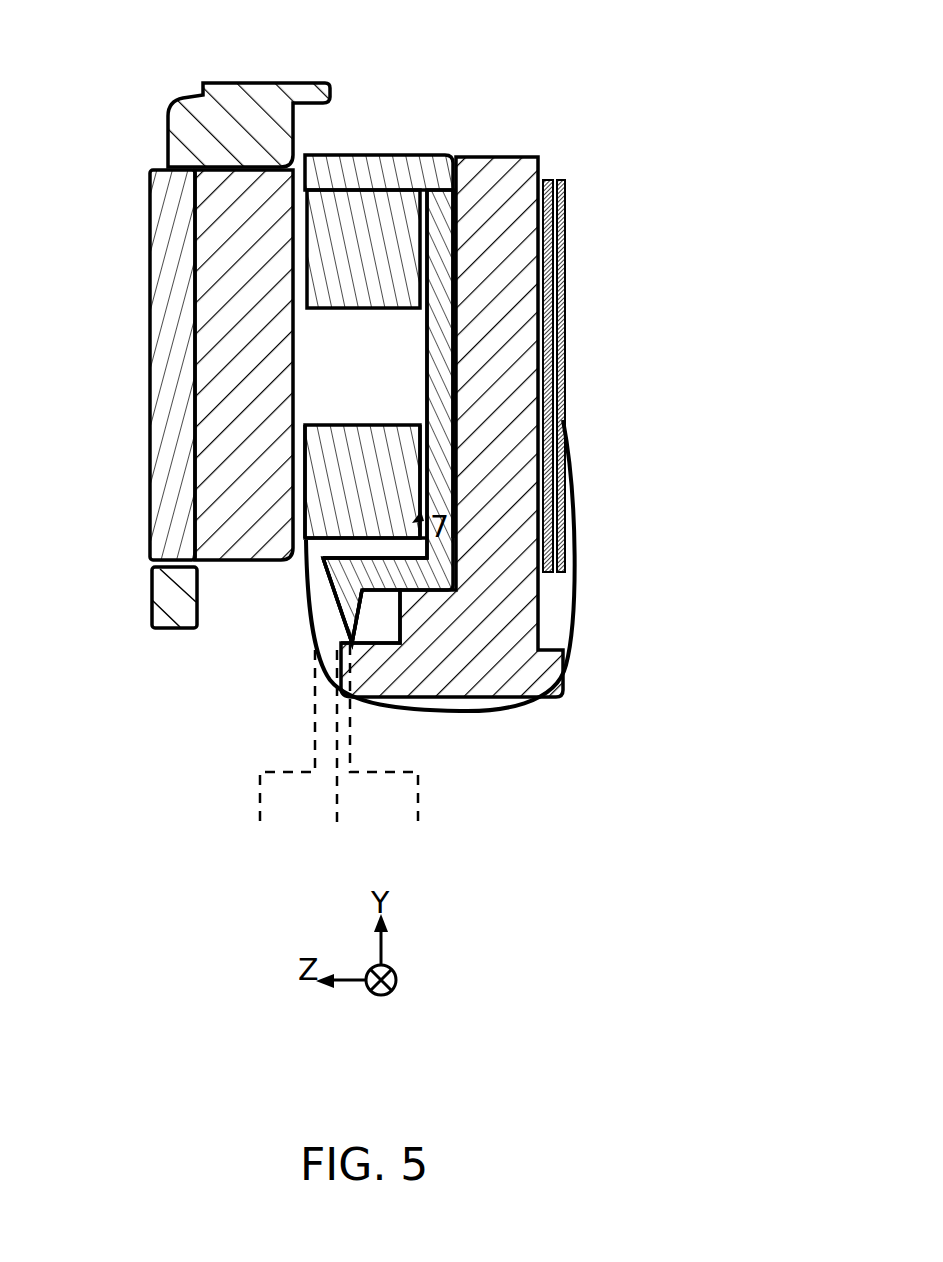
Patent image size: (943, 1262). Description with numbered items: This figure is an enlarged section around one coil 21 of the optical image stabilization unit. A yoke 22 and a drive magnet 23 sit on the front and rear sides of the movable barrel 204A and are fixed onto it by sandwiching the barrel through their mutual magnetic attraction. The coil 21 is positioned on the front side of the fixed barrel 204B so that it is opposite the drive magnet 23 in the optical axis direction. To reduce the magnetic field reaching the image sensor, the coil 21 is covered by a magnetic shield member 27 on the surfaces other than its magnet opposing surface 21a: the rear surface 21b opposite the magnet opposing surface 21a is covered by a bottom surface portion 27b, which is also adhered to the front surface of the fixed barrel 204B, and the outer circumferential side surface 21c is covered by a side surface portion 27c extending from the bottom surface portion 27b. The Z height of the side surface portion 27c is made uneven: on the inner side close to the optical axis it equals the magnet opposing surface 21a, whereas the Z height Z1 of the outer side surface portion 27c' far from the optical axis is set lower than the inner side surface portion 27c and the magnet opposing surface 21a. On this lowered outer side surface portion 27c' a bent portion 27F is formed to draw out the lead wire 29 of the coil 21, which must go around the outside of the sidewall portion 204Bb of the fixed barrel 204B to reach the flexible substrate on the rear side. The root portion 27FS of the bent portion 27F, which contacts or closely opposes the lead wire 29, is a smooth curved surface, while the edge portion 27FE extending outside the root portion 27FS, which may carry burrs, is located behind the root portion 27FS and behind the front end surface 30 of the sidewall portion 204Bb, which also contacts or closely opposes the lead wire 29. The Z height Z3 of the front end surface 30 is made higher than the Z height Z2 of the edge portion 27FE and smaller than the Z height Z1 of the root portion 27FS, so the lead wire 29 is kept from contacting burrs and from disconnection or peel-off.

The 1B movable barrel 204A is at (260, 88).
The 1B fixed barrel 204B is at (491, 157).
The sidewall portion 204Bb is at (377, 668).
The magnetic shield member 27 is at (531, 416).
The bottom surface portion 27b is at (432, 337).
The side surface portion 27c is at (379, 190).
The outer side surface portion 27c' is at (232, 620).
The bent portion 27F is at (118, 680).
The root portion 27FS is at (321, 576).
The edge portion 27FE is at (348, 636).
The yoke 22 is at (178, 346).
The drive magnet 23 is at (207, 476).
The coil 21 is at (385, 424).
The magnet opposing surface 21a is at (306, 443).
The rear surface 21b is at (410, 468).
The outer circumferential side surface 21c is at (309, 552).
The lead wire 29 is at (573, 585).
The front end surface 30 is at (336, 657).
The Z height of the root portion Z1 is at (276, 757).
The Z height of the edge portion Z2 is at (394, 755).
The Z height of the front end surface Z3 is at (340, 757).